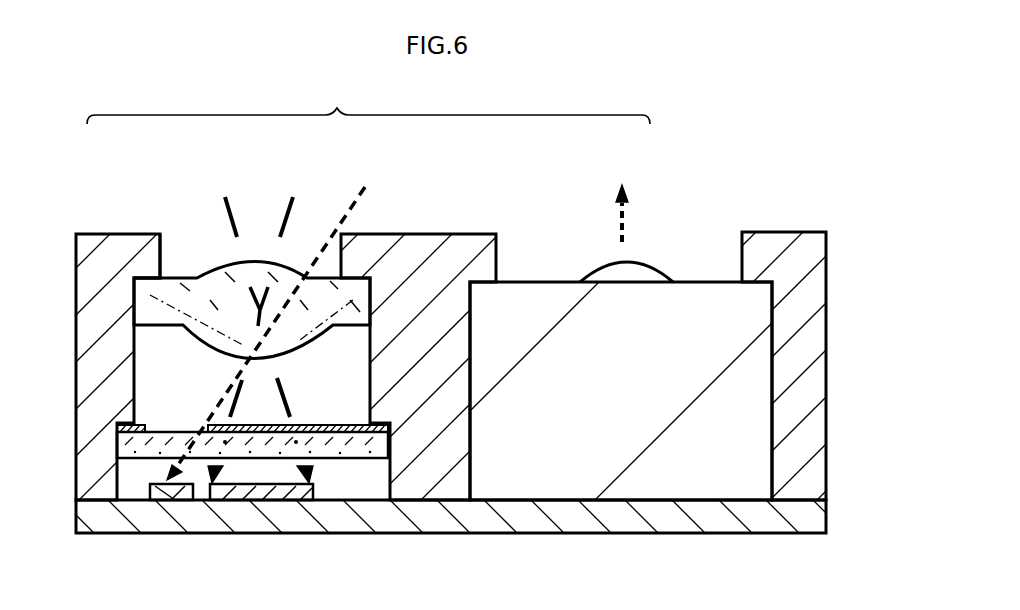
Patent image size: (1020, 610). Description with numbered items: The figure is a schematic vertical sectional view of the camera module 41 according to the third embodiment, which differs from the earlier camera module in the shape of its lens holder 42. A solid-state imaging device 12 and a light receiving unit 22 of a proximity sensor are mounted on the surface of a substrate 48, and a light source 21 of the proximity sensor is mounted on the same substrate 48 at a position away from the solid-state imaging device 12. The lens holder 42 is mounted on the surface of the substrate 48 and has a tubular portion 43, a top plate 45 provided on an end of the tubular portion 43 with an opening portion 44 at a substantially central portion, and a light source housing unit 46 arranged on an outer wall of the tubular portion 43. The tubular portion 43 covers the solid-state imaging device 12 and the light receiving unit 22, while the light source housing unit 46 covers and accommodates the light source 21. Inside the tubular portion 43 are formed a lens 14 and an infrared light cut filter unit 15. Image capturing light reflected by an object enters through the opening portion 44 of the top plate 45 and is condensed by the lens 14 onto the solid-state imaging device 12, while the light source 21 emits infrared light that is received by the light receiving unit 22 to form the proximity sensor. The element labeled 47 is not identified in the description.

The camera module 41 is at (716, 152).
The lens holder 42 is at (368, 278).
The tubular portion 43 is at (105, 305).
The opening portion 44 is at (193, 252).
The top plate 45 is at (145, 258).
The light source housing unit 46 is at (453, 295).
The light emitting element 47 is at (565, 258).
The light source 21 is at (703, 272).
The lens 14 is at (168, 310).
The infrared light cut filter unit 15 is at (120, 445).
The light receiving unit 22 is at (173, 488).
The solid-state imaging device 12 is at (252, 488).
The substrate 48 is at (428, 522).